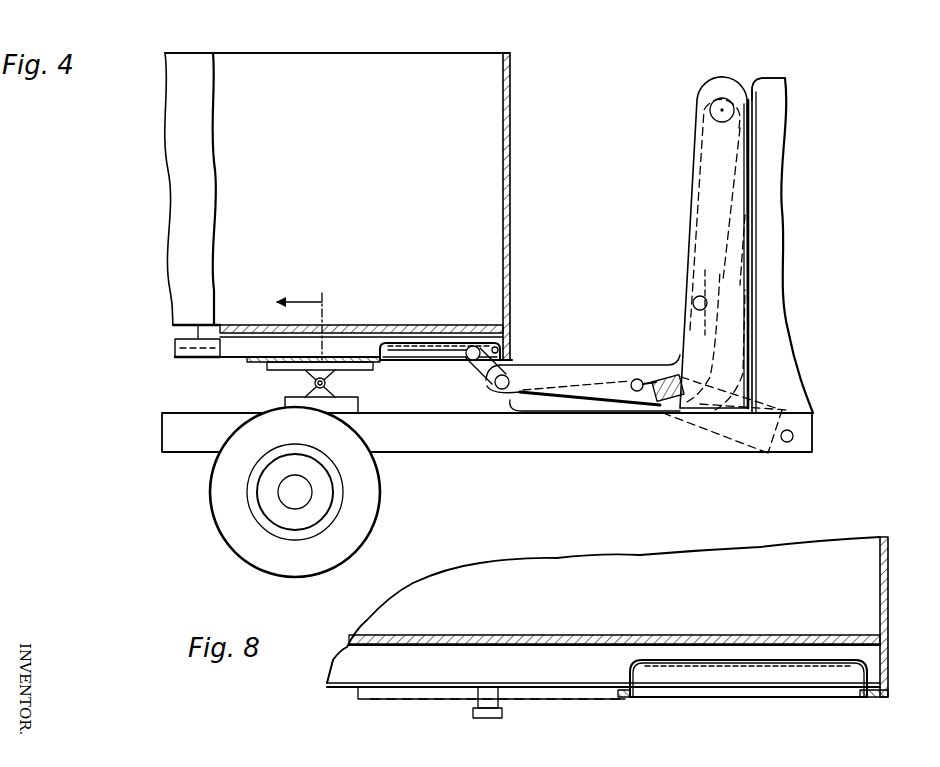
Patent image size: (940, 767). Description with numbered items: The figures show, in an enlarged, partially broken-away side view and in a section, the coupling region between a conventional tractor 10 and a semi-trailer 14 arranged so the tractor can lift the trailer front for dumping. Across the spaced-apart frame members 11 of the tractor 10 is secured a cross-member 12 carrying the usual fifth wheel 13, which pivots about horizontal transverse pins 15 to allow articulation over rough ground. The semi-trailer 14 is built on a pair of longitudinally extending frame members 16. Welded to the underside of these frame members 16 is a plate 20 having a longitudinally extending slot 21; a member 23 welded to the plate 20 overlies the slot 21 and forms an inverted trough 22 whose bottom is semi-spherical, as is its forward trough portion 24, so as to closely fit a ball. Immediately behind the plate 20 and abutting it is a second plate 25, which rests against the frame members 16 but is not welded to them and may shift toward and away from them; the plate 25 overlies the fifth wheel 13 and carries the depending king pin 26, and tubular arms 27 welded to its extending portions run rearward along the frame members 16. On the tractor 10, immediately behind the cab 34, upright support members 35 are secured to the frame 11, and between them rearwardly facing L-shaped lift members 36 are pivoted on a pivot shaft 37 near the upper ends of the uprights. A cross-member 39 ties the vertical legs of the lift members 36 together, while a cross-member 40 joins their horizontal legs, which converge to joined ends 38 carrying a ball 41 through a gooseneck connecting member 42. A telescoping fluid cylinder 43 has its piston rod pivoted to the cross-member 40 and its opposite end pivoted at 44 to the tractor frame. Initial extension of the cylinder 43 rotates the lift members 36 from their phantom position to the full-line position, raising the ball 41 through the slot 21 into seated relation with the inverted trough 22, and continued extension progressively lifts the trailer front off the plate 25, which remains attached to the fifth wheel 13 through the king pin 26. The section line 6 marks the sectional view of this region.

In FIG. 4, the section line 6 is at (308, 367).
In FIG. 4, the tractor 10 is at (790, 172).
In FIG. 4, the frame members 11 is at (537, 440).
In FIG. 4, the cross-member 12 is at (355, 405).
In FIG. 4, the fifth wheel 13 is at (282, 370).
In FIG. 4, the semi-trailer 14 is at (172, 353).
In FIG. 8, the semi-trailer 14 is at (325, 683).
In FIG. 4, the pins 15 is at (314, 384).
In FIG. 4, the frame members 16 is at (232, 345).
In FIG. 8, the frame members 16 is at (570, 690).
In FIG. 4, the plate 20 is at (518, 356).
In FIG. 8, the plate 20 is at (875, 694).
In FIG. 4, the slot 21 is at (414, 362).
In FIG. 8, the slot 21 is at (715, 690).
In FIG. 4, the inverted trough 22 is at (412, 341).
In FIG. 8, the inverted trough 22 is at (680, 690).
In FIG. 4, the member 23 is at (458, 347).
In FIG. 8, the member 23 is at (768, 667).
In FIG. 4, the forward trough portion 24 is at (498, 349).
In FIG. 8, the forward trough portion 24 is at (860, 676).
In FIG. 4, the plate 25 is at (258, 362).
In FIG. 8, the plate 25 is at (422, 700).
In FIG. 8, the king pin 26 is at (492, 720).
In FIG. 4, the arms 27 is at (197, 330).
In FIG. 4, the cab 34 is at (776, 90).
In FIG. 4, the upright support members 35 is at (708, 146).
In FIG. 4, the L-shaped lift members 36 is at (558, 367).
In FIG. 4, the pivot shaft 37 is at (724, 108).
In FIG. 4, the joined ends 38 is at (500, 390).
In FIG. 4, the cross-member 39 is at (690, 286).
In FIG. 4, the cross-member 40 is at (634, 379).
In FIG. 4, the ball 41 is at (478, 347).
In FIG. 4, the gooseneck connecting member 42 is at (478, 368).
In FIG. 4, the fluid cylinder 43 is at (737, 430).
In FIG. 4, the pivot connection 44 is at (795, 436).